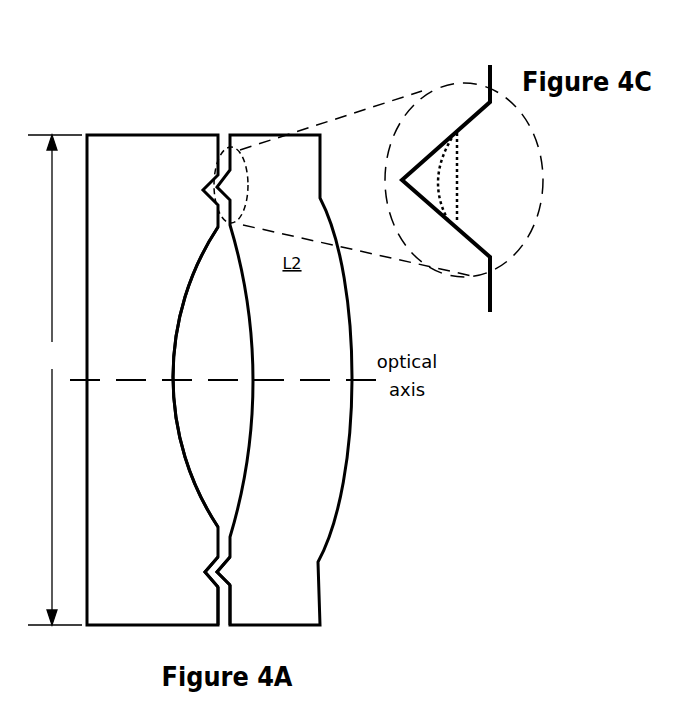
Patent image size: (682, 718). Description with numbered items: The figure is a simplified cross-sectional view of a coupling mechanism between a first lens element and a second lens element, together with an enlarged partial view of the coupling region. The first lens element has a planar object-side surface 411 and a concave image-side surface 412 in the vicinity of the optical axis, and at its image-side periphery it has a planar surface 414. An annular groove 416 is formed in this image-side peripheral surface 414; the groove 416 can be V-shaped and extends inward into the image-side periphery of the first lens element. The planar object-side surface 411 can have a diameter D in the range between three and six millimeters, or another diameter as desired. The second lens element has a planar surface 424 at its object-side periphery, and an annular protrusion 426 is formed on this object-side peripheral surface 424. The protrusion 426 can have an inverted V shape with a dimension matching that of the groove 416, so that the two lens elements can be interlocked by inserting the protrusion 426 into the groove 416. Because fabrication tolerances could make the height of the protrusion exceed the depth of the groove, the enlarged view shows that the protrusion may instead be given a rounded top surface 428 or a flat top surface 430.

In FIG. 4A, the planar object-side surface 411 is at (92, 495).
In FIG. 4A, the concave image-side surface 412 is at (178, 375).
In FIG. 4A, the planar surface 414 is at (210, 600).
In FIG. 4A, the annular groove 416 is at (204, 571).
In FIG. 4A, the planar surface 424 is at (238, 605).
In FIG. 4A, the annular protrusion 426 is at (218, 572).
In FIG. 4C, the annular protrusion 426 is at (450, 133).
In FIG. 4C, the rounded top surface 428 is at (440, 172).
In FIG. 4C, the flat top surface 430 is at (458, 170).
In FIG. 4A, the diameter D is at (55, 380).